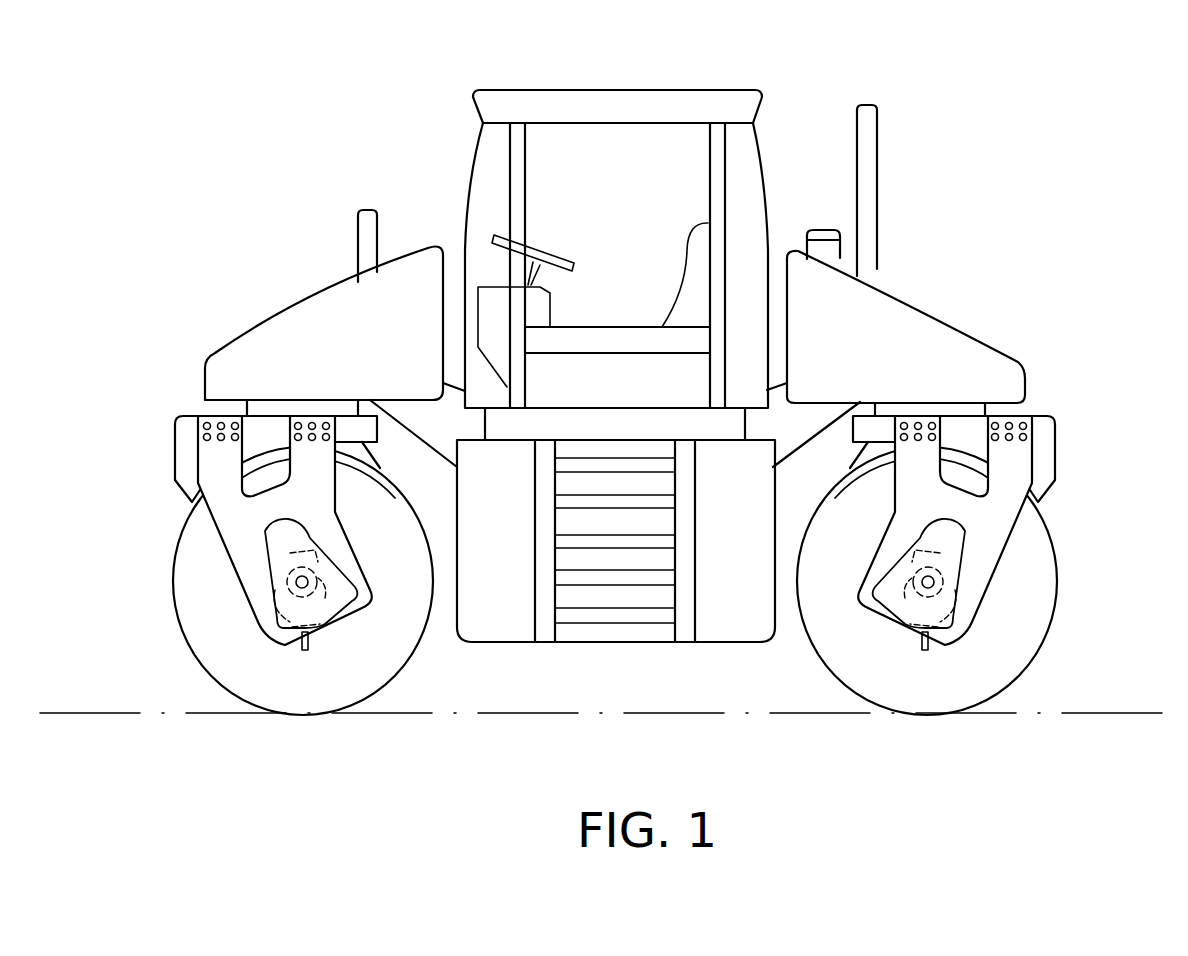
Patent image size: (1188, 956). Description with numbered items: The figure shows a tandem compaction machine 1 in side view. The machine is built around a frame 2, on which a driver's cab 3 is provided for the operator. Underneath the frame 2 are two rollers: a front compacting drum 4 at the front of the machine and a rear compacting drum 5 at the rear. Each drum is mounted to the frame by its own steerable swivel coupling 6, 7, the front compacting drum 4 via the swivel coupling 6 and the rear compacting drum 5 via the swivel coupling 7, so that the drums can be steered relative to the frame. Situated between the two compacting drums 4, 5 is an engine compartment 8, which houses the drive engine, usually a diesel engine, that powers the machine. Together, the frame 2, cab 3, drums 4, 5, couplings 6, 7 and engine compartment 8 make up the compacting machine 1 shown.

The tandem compaction machine 1 is at (980, 87).
The frame 2 is at (788, 430).
The driver's cab 3 is at (575, 187).
The front compacting drum 4 is at (231, 646).
The rear compacting drum 5 is at (1003, 647).
The steerable swivel coupling 6 is at (268, 410).
The steerable swivel coupling 7 is at (962, 410).
The engine compartment 8 is at (725, 580).